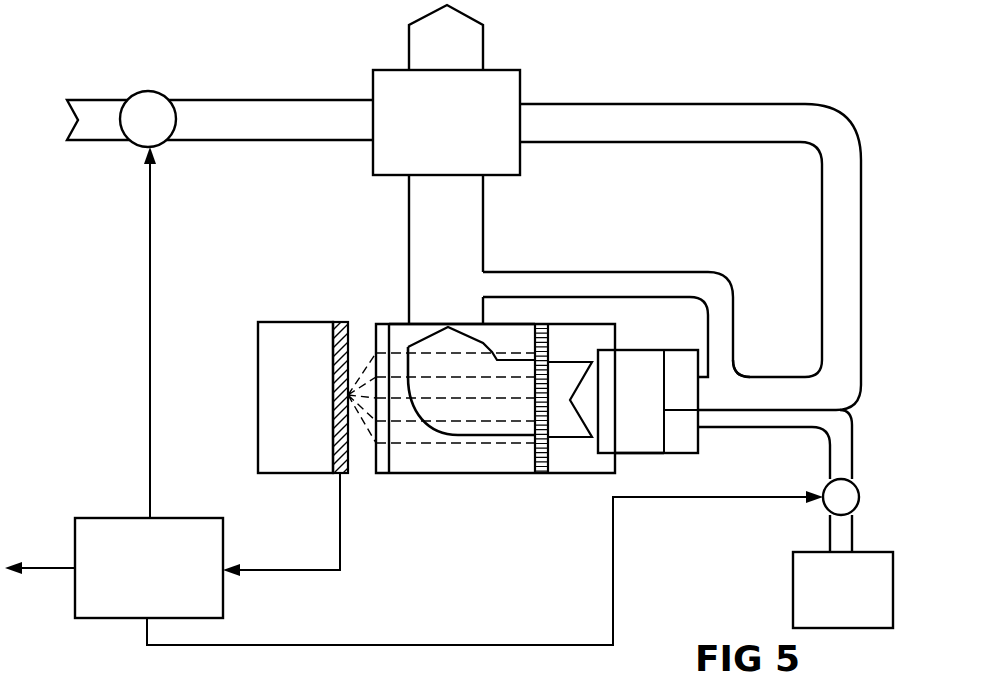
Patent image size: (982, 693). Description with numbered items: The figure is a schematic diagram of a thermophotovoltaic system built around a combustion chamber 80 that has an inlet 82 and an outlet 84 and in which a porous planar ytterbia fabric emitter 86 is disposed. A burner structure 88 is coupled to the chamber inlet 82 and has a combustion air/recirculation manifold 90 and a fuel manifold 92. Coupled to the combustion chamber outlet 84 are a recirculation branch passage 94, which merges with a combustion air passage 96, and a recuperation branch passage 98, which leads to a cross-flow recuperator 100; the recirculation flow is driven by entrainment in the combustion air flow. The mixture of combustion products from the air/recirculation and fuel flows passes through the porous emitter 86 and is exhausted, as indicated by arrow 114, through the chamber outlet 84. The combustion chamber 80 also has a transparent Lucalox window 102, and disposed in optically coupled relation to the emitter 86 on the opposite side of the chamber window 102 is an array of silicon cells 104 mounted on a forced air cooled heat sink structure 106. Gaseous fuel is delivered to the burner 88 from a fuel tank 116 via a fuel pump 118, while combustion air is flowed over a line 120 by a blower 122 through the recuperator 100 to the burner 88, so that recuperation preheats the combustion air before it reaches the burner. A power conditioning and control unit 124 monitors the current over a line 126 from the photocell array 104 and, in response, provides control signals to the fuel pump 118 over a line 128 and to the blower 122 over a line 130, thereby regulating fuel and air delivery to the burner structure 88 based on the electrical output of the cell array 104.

The combustion chamber 80 is at (416, 488).
The inlet 82 is at (597, 360).
The outlet 84 is at (412, 322).
The porous planar ytterbia fabric emitter 86 is at (525, 476).
The burner structure 88 is at (636, 450).
The combustion air/recirculation manifold 90 is at (673, 362).
The fuel manifold 92 is at (700, 450).
The recirculation branch passage 94 is at (537, 270).
The combustion air passage 96 is at (777, 387).
The recuperation branch passage 98 is at (409, 196).
The cross-flow recuperator 100 is at (522, 88).
The transparent Lucalox window 102 is at (372, 474).
The array of silicon cells 104 is at (348, 322).
The forced air cooled heat sink structure 106 is at (278, 330).
The exhaust flow arrow 114 is at (443, 440).
The fuel tank 116 is at (865, 630).
The fuel pump 118 is at (855, 485).
The line 120 is at (305, 100).
The blower 122 is at (146, 91).
The power conditioning and control unit 124 is at (173, 518).
The line 126 is at (305, 572).
The line 128 is at (748, 497).
The line 130 is at (148, 297).